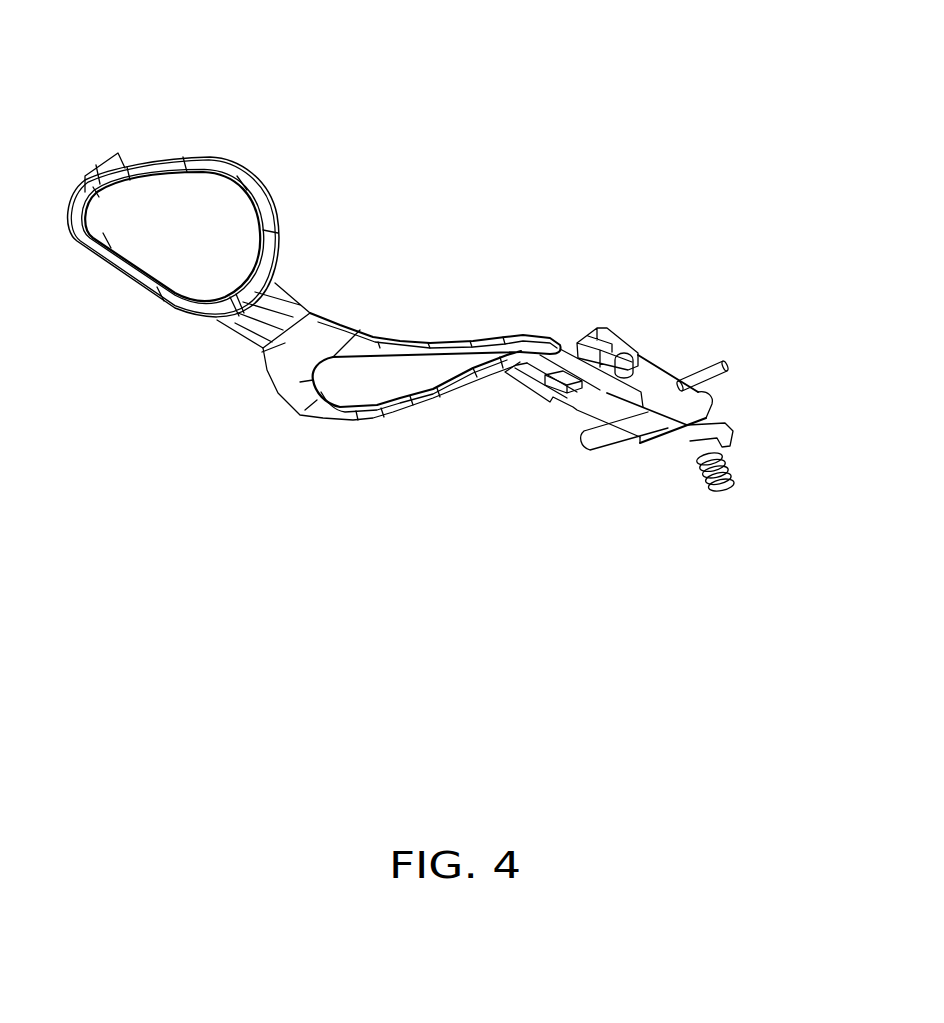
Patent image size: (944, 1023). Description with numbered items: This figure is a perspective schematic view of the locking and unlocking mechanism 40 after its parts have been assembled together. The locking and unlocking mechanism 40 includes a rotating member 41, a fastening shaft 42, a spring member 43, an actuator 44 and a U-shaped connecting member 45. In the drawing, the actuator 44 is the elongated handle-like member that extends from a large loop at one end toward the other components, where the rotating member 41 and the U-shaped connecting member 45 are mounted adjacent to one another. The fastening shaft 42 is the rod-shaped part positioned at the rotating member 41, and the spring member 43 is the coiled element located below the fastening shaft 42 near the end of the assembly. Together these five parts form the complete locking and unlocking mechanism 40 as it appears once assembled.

The locking and unlocking mechanism 40 is at (449, 82).
The rotating member 41 is at (620, 345).
The fastening shaft 42 is at (707, 365).
The spring member 43 is at (733, 473).
The actuator 44 is at (518, 332).
The U-shaped connecting member 45 is at (637, 365).